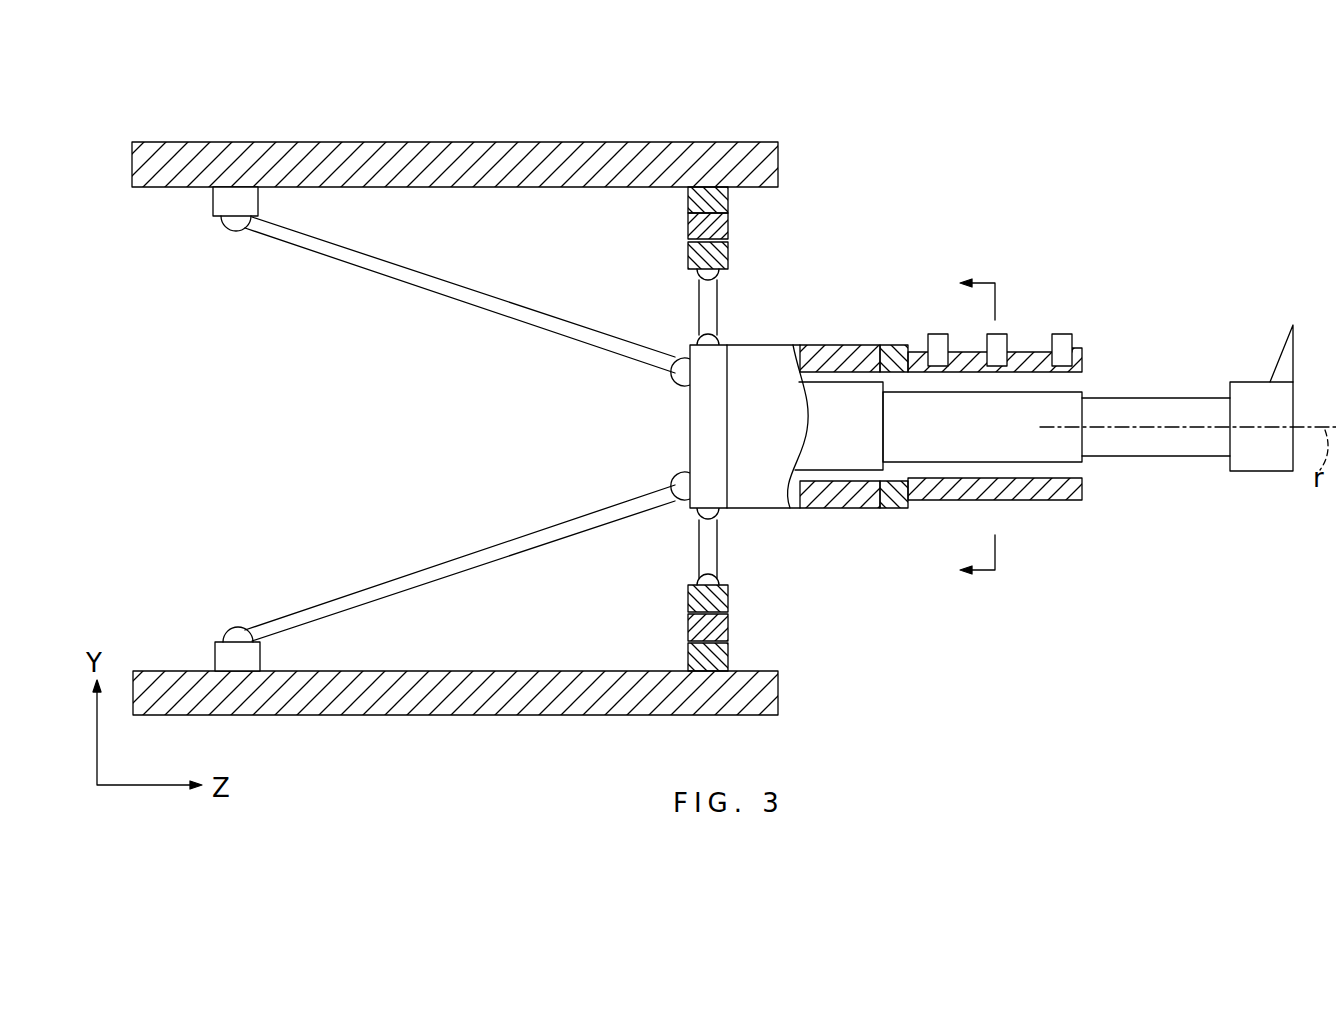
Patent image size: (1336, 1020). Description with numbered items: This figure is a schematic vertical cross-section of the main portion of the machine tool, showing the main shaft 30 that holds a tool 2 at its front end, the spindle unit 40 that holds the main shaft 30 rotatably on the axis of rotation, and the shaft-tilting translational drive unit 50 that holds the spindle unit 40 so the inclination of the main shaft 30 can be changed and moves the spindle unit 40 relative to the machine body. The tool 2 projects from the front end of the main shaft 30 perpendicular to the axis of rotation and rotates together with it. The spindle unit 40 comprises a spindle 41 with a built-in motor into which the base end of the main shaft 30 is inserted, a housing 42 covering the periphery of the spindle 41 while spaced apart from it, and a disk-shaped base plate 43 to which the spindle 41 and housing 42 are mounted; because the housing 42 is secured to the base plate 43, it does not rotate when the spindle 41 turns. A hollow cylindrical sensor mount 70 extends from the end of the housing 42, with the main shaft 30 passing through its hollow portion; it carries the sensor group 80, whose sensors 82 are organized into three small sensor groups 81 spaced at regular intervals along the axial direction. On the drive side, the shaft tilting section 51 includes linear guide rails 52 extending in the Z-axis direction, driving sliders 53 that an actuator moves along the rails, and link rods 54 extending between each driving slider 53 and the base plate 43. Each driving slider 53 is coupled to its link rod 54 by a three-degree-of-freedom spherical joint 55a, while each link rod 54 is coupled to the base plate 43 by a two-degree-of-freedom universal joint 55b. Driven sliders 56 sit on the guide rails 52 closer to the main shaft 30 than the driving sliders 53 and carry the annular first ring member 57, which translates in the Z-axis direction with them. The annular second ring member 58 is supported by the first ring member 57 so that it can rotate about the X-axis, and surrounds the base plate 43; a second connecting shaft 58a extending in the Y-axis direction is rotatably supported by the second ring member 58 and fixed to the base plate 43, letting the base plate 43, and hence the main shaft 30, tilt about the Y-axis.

The tool 2 is at (1277, 353).
The main shaft 30 is at (1166, 440).
The spindle unit 40 is at (878, 568).
The spindle 41 is at (853, 455).
The housing 42 is at (798, 495).
The base plate 43 is at (722, 478).
The shaft-tilting translational drive unit 50 is at (635, 129).
The shaft tilting section 51 is at (356, 414).
The linear guide rail 52 is at (450, 160).
The driving slider 53 is at (236, 203).
The link rod 54 is at (455, 291).
The spherical joint 55a is at (236, 226).
The universal joint 55b is at (683, 382).
The driven slider 56 is at (722, 199).
The first ring member 57 is at (695, 228).
The second ring member 58 is at (722, 257).
The second connecting shaft 58a is at (708, 305).
The sensor mount 70 is at (1052, 500).
The sensor group 80 is at (1087, 303).
The small sensor group 81 is at (916, 334).
The sensor 82 is at (997, 338).